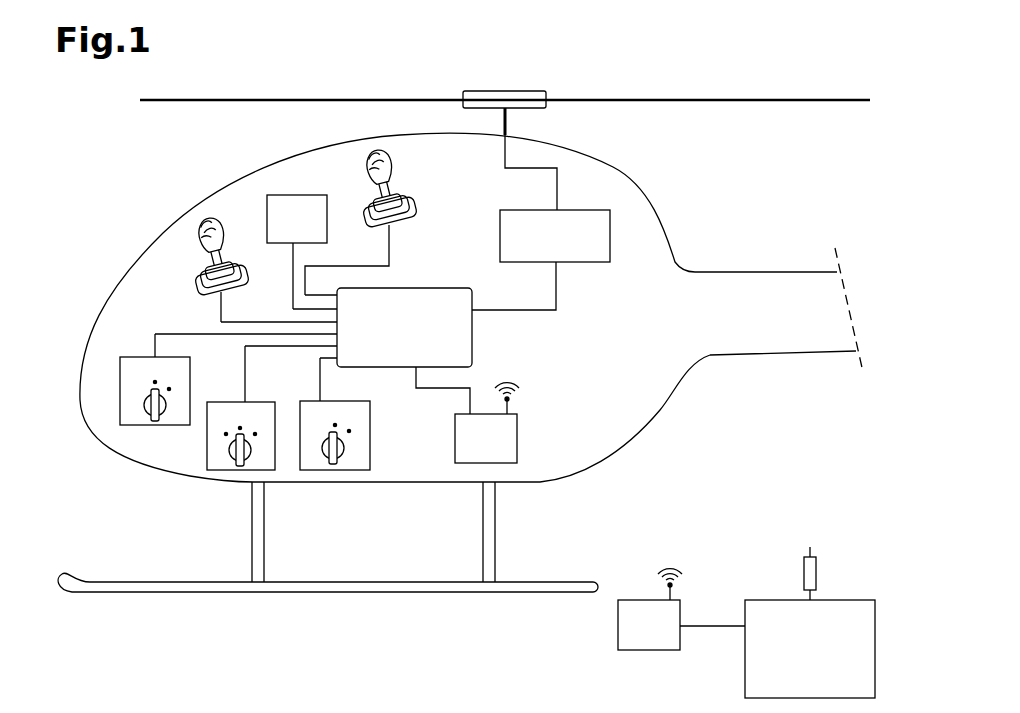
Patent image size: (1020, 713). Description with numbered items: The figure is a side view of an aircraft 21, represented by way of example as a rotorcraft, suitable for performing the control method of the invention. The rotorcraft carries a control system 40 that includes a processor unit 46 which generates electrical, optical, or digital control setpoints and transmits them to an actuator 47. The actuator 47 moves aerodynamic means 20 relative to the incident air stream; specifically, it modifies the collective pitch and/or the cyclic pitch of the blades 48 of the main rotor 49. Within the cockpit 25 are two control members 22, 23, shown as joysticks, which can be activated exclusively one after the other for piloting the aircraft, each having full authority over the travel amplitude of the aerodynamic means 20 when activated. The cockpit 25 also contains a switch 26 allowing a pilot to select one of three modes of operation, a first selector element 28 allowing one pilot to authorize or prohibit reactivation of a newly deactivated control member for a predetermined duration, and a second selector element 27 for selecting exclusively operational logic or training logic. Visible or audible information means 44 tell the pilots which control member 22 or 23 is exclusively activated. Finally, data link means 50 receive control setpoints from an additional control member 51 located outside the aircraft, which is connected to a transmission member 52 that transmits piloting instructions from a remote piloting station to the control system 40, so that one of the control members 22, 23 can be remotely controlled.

The aerodynamic means 20 is at (458, 92).
The aircraft 21 is at (671, 422).
The control member 22 is at (213, 248).
The control member 23 is at (396, 183).
The cockpit 25 is at (262, 175).
The switch 26 is at (207, 452).
The second selector element 27 is at (137, 357).
The first selector element 28 is at (322, 470).
The control system 40 is at (381, 392).
The information means 44 is at (297, 252).
The processor unit 46 is at (474, 322).
The actuator 47 is at (585, 262).
The blades 48 is at (683, 100).
The main rotor 49 is at (522, 82).
The data link means 50 is at (467, 415).
The additional control member 51 is at (863, 593).
The transmission member 52 is at (681, 609).